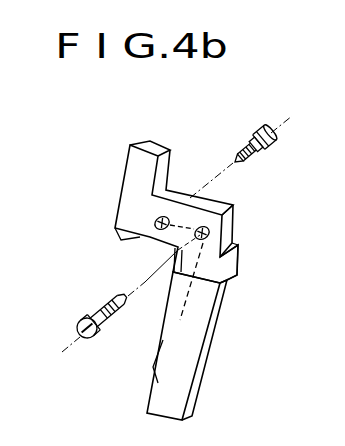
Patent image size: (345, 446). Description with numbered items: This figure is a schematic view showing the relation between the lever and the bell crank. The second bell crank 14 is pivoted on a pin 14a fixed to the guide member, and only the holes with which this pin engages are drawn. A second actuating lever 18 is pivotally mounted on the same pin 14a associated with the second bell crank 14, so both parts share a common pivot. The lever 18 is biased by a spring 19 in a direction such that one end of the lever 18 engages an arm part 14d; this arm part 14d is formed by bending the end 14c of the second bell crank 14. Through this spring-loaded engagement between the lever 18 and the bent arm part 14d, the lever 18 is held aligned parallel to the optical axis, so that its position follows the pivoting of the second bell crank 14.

The second bell crank 14 is at (130, 215).
The pin 14a is at (142, 160).
The end of the second bell crank 14c is at (228, 279).
The arm part 14d is at (232, 263).
The second actuating lever 18 is at (180, 357).
The spring 19 is at (183, 300).